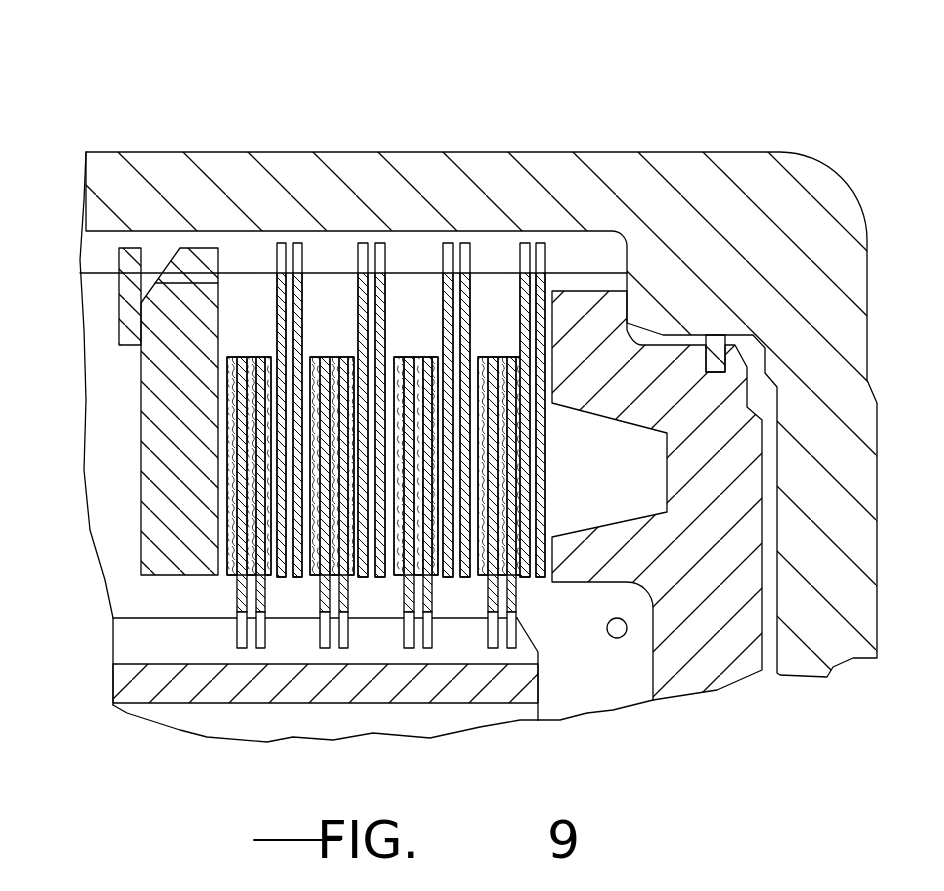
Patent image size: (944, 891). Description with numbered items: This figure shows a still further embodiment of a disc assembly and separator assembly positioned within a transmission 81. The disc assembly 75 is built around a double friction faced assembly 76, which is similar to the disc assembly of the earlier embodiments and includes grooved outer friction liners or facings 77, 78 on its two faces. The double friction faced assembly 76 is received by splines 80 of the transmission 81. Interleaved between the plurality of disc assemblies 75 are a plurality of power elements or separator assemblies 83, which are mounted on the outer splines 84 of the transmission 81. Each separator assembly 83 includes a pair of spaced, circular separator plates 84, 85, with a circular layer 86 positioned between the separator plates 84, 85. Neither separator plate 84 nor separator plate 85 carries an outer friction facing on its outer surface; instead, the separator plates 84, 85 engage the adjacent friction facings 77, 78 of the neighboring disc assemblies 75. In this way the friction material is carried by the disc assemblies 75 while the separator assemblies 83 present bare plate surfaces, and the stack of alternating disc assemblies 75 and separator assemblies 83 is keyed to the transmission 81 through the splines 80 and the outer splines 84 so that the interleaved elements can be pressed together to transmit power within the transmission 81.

The disc assembly 75 is at (173, 488).
The double friction faced assembly 76 is at (223, 498).
The grooved outer friction liner 77 is at (223, 423).
The grooved outer friction liner 78 is at (262, 560).
The splines 80 is at (510, 655).
The transmission 81 is at (877, 401).
The separator assembly 83 is at (304, 552).
The separator plate 84 is at (360, 303).
The separator plate 85 is at (388, 303).
The circular layer 86 is at (300, 395).